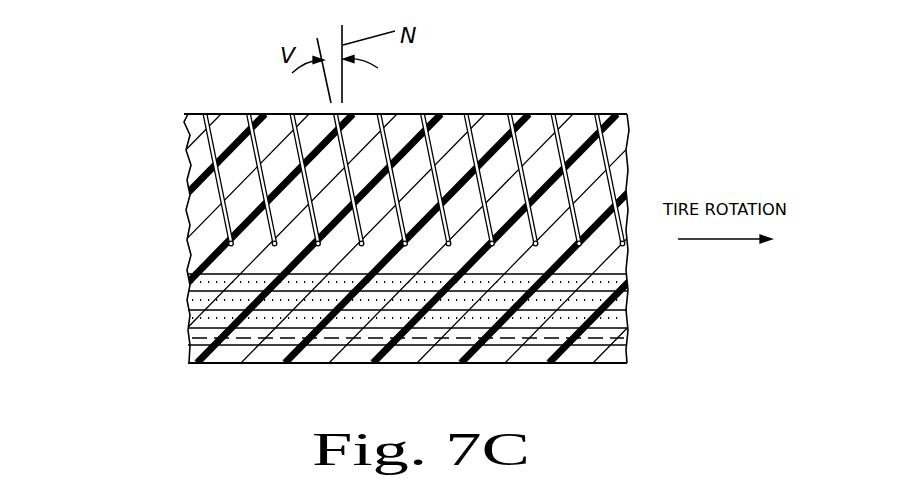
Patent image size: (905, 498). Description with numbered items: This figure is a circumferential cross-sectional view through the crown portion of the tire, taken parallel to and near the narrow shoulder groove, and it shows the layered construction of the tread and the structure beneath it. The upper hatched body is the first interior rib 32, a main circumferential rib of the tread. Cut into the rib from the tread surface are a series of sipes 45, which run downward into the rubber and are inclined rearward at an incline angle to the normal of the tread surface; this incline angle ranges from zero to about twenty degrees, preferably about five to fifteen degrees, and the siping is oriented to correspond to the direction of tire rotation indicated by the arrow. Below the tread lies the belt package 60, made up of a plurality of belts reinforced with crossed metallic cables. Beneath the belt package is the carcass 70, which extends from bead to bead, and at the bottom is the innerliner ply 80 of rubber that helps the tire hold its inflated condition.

The first interior rib 32 is at (280, 113).
The sipes 45 is at (495, 115).
The belt package 60 is at (640, 315).
The carcass 70 is at (637, 340).
The innerliner ply 80 is at (184, 360).